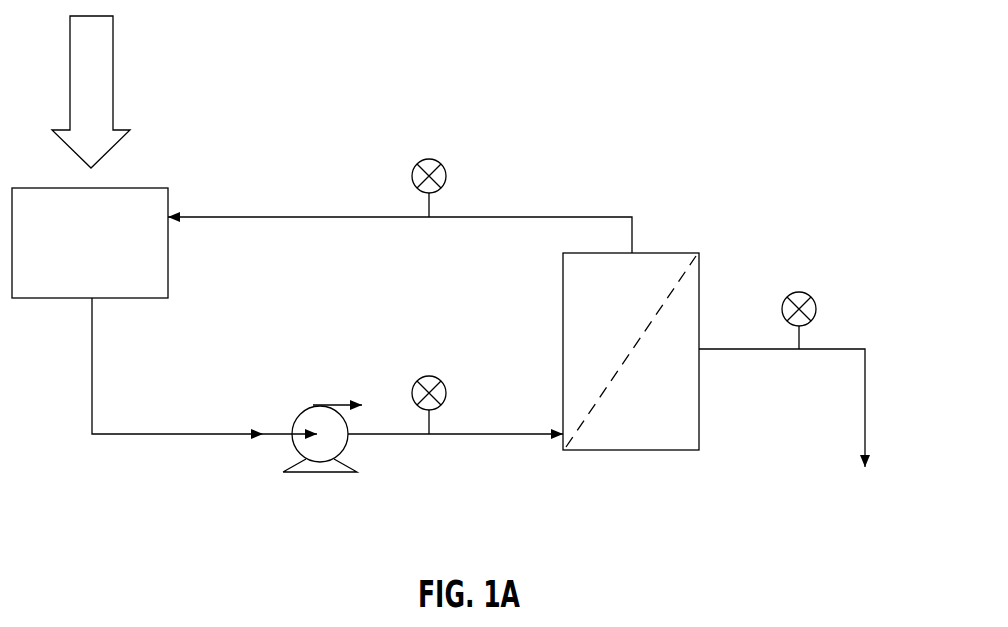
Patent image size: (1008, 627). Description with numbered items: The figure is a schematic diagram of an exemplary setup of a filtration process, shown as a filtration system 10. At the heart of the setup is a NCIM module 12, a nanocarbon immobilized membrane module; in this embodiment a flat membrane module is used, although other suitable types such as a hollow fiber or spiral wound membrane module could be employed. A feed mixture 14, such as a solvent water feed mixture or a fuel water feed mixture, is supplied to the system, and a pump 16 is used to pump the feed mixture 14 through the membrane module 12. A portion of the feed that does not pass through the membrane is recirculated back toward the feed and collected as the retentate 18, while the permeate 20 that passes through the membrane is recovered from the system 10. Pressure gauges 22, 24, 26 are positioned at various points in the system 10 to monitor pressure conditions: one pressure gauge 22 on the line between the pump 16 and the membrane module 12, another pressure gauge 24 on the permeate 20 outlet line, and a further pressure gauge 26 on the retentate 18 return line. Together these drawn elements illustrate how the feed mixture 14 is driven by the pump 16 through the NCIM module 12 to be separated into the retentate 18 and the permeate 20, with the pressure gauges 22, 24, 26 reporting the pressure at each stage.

The filtration system 10 is at (726, 109).
The NCIM module 12 is at (683, 403).
The feed mixture 14 is at (137, 196).
The pump 16 is at (313, 417).
The retentate 18 is at (270, 165).
The permeate 20 is at (840, 506).
The pressure gauge 22 is at (446, 393).
The pressure gauge 24 is at (816, 309).
The pressure gauge 26 is at (446, 176).